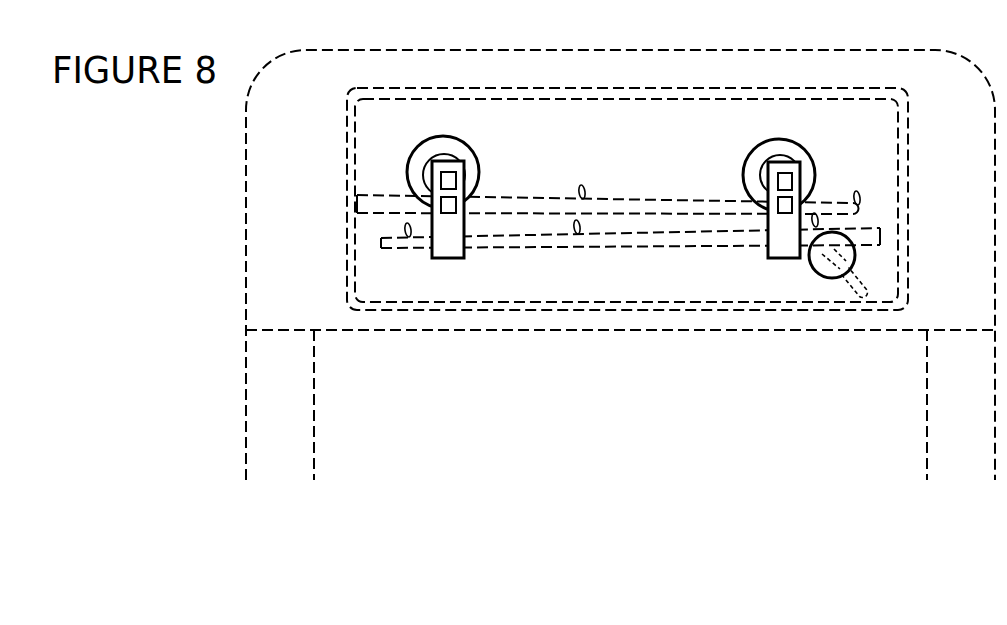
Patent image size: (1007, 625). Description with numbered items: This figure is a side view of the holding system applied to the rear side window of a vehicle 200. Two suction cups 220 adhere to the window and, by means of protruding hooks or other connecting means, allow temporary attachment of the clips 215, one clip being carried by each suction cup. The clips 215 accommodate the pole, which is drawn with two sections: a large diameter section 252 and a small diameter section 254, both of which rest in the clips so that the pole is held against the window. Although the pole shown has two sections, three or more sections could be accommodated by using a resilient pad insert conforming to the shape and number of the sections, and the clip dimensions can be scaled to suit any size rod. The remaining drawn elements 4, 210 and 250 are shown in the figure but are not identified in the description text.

The vehicle 200 is at (717, 426).
The pocket enclosure 210 is at (548, 282).
The clip 215 is at (443, 238).
The suction cup 220 is at (445, 147).
The cord loop 4 is at (581, 185).
The knob 250 is at (813, 272).
The large diameter section of the pole 252 is at (880, 245).
The small diameter section of the pole 254 is at (823, 202).